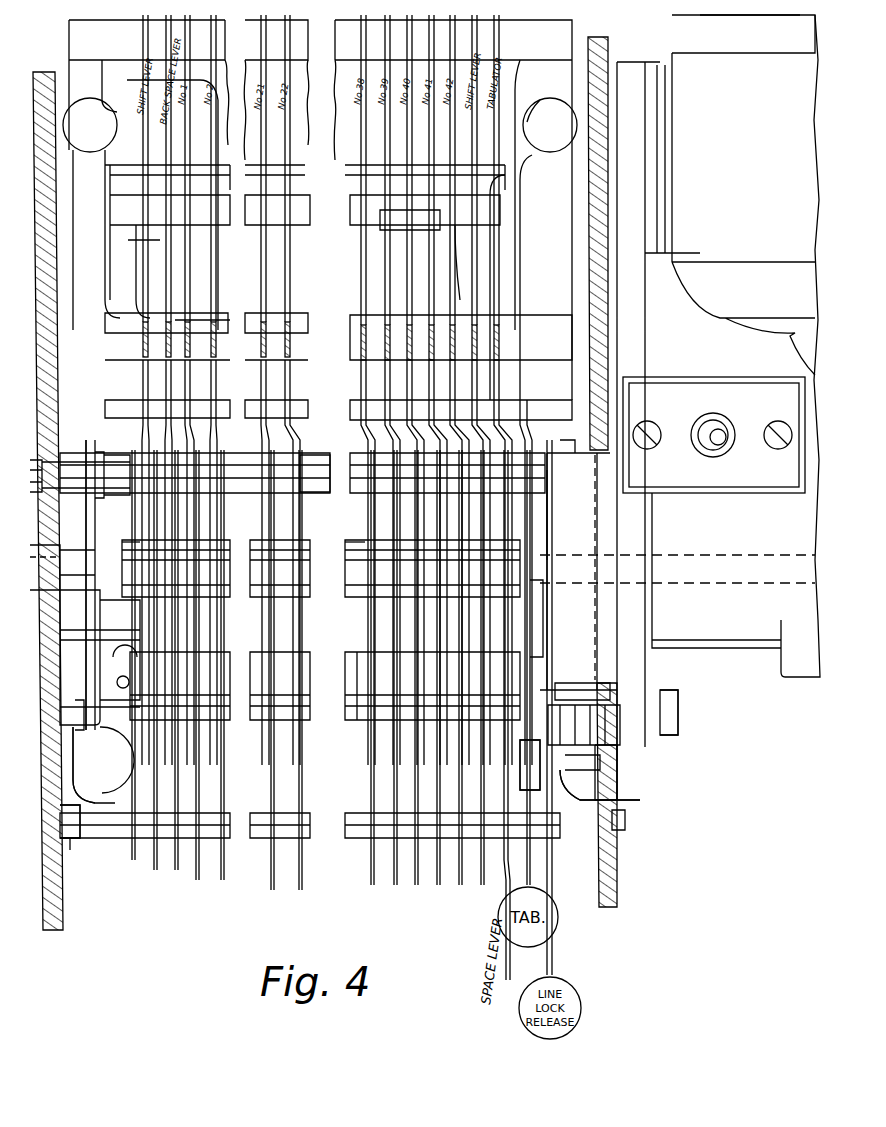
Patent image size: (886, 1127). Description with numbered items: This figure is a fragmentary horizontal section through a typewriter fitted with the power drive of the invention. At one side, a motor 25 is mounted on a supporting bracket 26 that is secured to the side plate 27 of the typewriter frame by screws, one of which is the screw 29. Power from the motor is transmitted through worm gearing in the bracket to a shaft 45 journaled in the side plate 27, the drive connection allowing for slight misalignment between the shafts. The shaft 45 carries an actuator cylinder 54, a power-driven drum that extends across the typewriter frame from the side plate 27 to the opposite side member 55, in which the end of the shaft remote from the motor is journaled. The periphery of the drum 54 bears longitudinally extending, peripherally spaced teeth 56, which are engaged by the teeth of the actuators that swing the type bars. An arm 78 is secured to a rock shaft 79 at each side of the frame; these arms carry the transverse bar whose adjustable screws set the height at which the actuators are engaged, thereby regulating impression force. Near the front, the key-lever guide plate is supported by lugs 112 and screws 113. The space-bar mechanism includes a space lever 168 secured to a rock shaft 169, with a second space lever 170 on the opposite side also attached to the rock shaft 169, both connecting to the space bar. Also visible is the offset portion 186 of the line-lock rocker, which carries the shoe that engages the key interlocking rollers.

The motor 25 is at (690, 30).
The supporting bracket 26 is at (710, 635).
The side plate 27 is at (618, 775).
The screw 29 is at (675, 714).
The shaft 45 is at (548, 563).
The actuator cylinder 54 is at (358, 542).
The side member 55 is at (60, 445).
The teeth 56 is at (132, 542).
The arm 78 is at (92, 538).
The rock shaft 79 is at (308, 472).
The lug 112 is at (100, 812).
The screw 113 is at (58, 848).
The space lever 168 is at (470, 252).
The rock shaft 169 is at (420, 215).
The second space lever 170 is at (130, 248).
The offset portion 186 is at (585, 845).